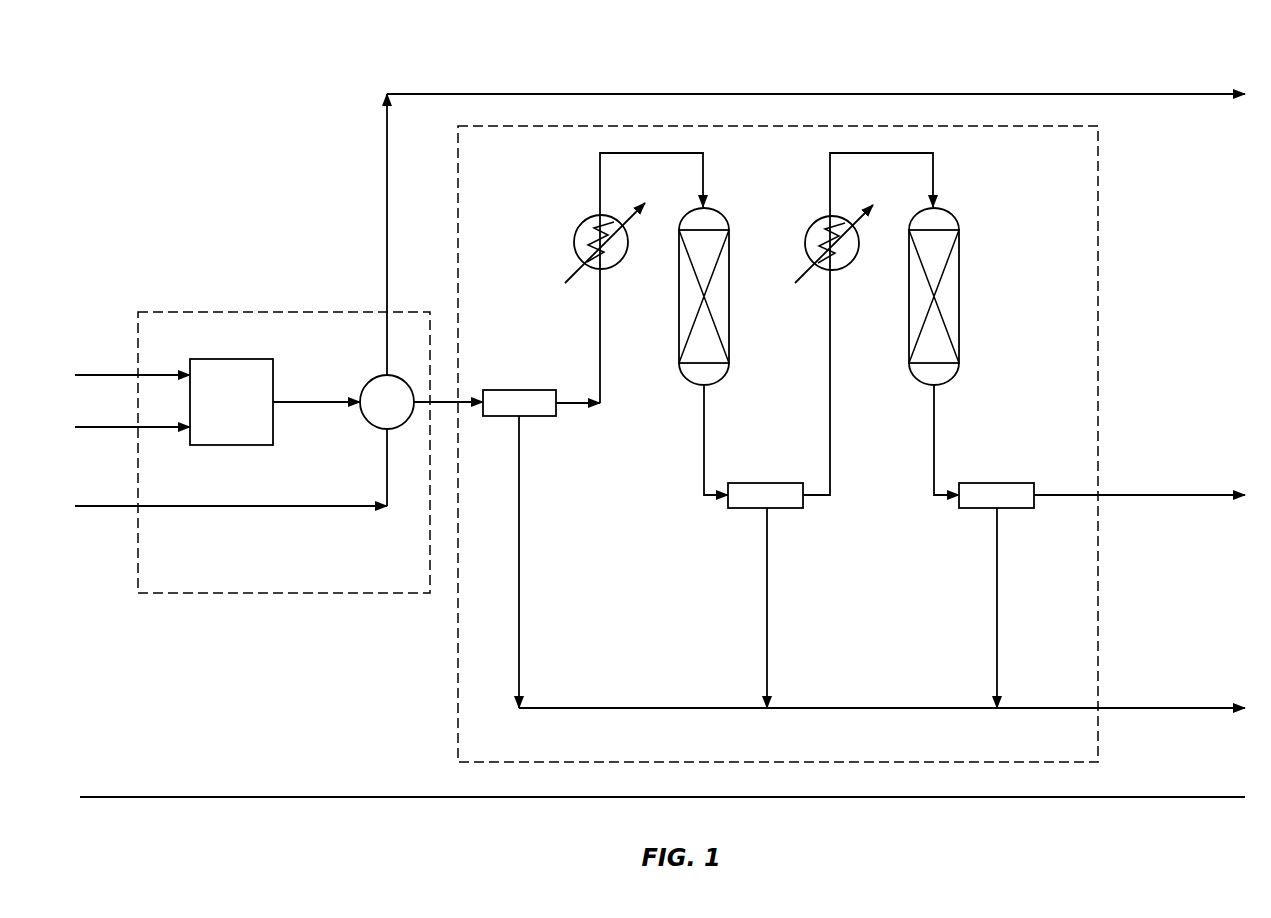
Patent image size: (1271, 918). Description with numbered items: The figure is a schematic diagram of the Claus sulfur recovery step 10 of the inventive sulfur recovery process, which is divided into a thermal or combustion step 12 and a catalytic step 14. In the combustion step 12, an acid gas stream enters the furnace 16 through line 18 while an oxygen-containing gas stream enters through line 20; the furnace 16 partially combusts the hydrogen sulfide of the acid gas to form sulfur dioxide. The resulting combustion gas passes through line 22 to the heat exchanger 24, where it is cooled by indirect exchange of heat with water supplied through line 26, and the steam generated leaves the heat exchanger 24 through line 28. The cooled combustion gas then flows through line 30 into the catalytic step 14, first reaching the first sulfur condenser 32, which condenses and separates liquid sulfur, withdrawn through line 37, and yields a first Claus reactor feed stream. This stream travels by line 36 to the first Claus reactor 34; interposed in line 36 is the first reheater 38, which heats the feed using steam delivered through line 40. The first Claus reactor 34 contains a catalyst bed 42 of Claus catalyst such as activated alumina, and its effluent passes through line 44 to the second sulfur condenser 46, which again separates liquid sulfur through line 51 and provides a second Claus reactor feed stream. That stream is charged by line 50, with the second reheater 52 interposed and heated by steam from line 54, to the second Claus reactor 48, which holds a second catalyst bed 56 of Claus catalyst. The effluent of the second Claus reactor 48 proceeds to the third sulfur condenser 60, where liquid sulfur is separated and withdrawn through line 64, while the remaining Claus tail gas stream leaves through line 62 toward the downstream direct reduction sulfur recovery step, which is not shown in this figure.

The Claus sulfur recovery step 10 is at (638, 50).
The thermal or combustion step 12 is at (173, 311).
The catalytic step 14 is at (1100, 178).
The furnace 16 is at (232, 358).
The line 18 is at (103, 372).
The line 20 is at (103, 425).
The line 22 is at (293, 405).
The heat exchanger 24 is at (373, 378).
The line 26 is at (103, 504).
The line 28 is at (457, 93).
The line 30 is at (437, 406).
The first sulfur condenser 32 is at (522, 390).
The first Claus reactor 34 is at (731, 326).
The line 36 is at (645, 152).
The line 37 is at (521, 605).
The first reheater 38 is at (590, 218).
The line 40 is at (568, 282).
The catalyst bed 42 is at (697, 265).
The line 44 is at (703, 447).
The second sulfur condenser 46 is at (768, 483).
The second Claus reactor 48 is at (961, 326).
The line 50 is at (865, 152).
The line 51 is at (769, 605).
The second reheater 52 is at (823, 216).
The line 54 is at (800, 281).
The catalyst bed 56 is at (927, 265).
The third sulfur condenser 60 is at (1008, 483).
The line 62 is at (1177, 494).
The line 64 is at (998, 605).